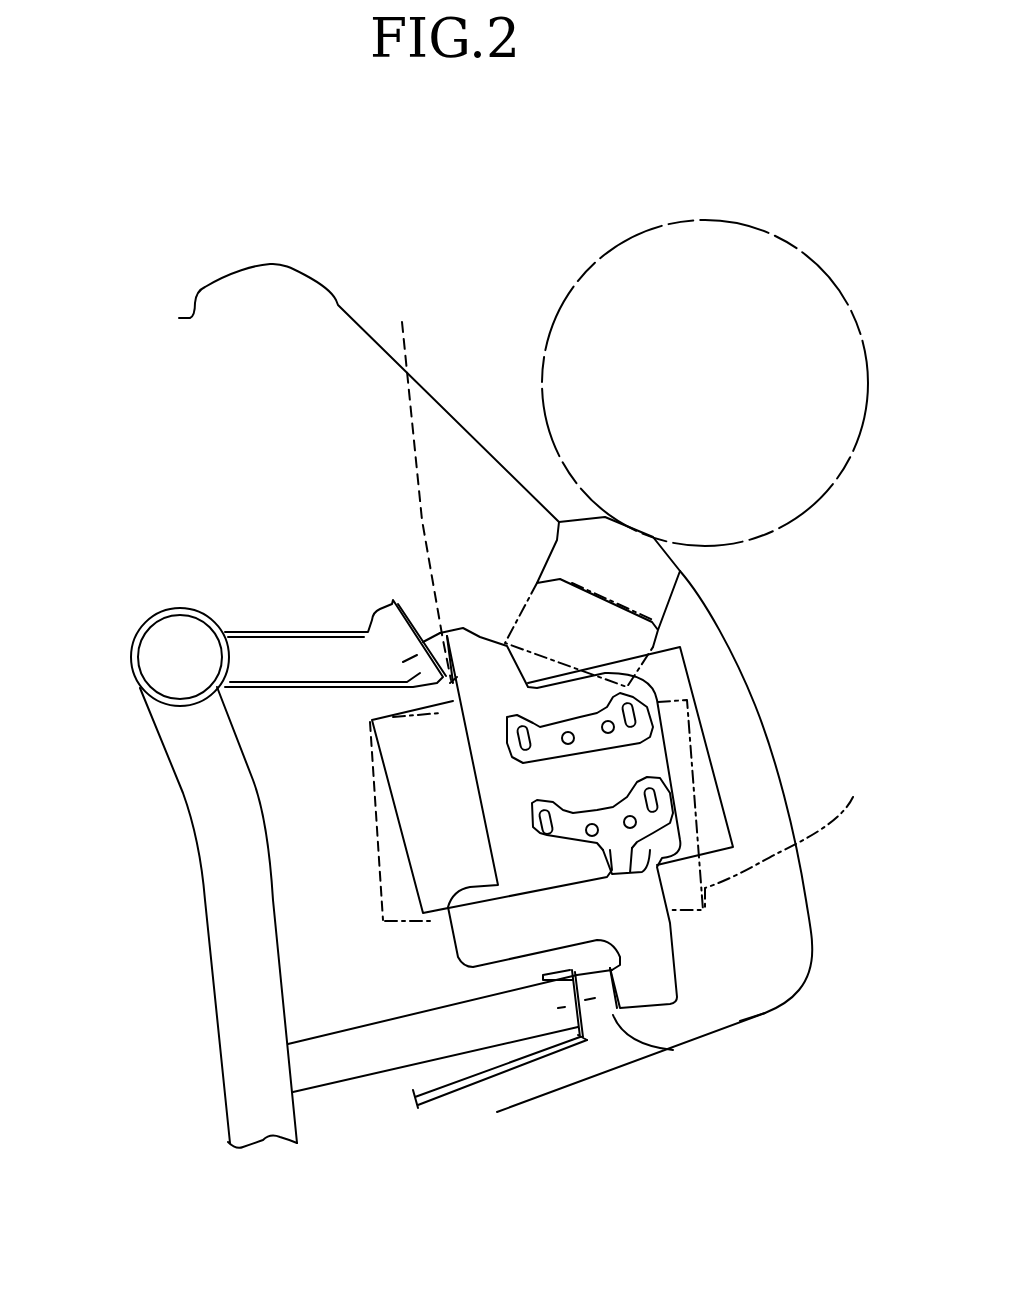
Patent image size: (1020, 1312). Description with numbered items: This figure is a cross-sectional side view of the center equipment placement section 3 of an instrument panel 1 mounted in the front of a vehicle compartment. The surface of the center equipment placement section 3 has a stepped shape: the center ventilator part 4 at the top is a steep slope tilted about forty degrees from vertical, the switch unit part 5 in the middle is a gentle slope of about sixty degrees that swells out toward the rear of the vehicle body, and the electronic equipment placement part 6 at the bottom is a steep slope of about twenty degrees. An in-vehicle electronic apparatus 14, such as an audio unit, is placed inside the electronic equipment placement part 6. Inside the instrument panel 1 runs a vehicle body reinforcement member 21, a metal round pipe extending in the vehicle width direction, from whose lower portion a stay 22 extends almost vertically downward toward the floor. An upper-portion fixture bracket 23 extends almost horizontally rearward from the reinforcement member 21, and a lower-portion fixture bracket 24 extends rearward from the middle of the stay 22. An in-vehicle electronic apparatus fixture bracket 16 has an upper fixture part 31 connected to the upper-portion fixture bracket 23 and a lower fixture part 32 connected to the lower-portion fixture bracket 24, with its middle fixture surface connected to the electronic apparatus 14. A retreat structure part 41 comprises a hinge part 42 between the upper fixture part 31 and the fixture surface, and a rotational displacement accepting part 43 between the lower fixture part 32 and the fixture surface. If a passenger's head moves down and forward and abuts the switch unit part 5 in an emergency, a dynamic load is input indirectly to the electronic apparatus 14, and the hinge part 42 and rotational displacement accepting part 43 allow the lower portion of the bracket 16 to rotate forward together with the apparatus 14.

The instrument panel 1 is at (369, 319).
The center equipment placement section 3 is at (327, 235).
The center ventilator part 4 is at (442, 331).
The switch unit part 5 is at (678, 520).
The electronic equipment placement part 6 is at (777, 663).
The in-vehicle electronic apparatus 14 is at (722, 800).
The in-vehicle electronic apparatus fixture bracket 16 is at (672, 748).
The vehicle body reinforcement member 21 is at (134, 681).
The stay 22 is at (208, 945).
The upper-portion fixture bracket 23 is at (266, 690).
The lower-portion fixture bracket 24 is at (393, 1073).
The upper fixture part 31 is at (418, 482).
The lower fixture part 32 is at (581, 980).
The retreat structure part 41 is at (614, 721).
The hinge part 42 is at (457, 677).
The rotational displacement accepting part 43 is at (673, 1048).